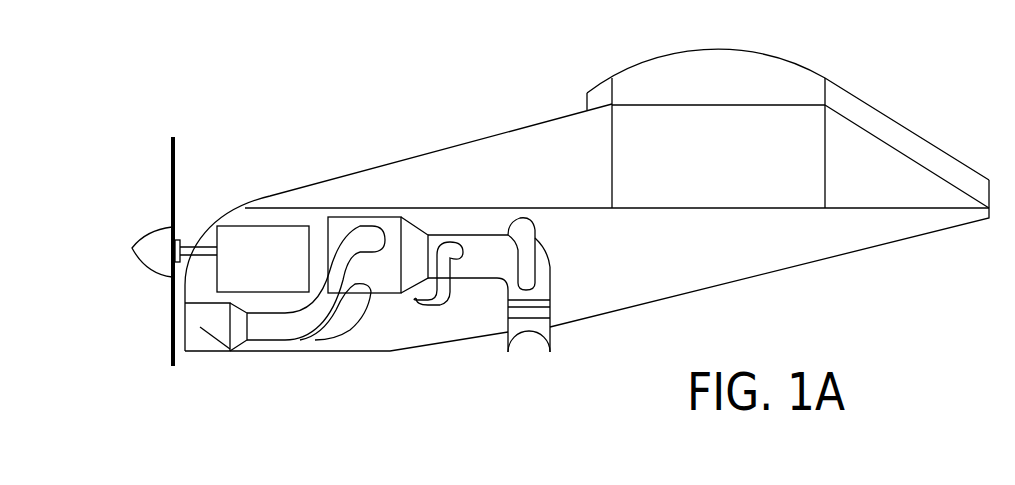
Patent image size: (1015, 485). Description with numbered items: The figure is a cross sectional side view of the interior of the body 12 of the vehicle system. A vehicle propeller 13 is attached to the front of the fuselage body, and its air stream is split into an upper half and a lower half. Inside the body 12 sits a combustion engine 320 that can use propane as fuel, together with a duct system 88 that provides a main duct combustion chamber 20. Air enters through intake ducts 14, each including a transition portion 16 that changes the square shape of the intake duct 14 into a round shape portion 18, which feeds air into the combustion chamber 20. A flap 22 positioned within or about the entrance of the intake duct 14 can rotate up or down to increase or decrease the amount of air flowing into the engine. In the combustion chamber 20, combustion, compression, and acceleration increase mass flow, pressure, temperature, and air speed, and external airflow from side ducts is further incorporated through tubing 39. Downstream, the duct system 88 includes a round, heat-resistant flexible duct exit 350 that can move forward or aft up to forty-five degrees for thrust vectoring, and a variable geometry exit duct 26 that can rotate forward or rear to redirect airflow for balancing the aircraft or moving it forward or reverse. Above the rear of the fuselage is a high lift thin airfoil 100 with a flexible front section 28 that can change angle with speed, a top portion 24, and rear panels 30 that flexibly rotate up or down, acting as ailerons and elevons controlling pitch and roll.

The body 12 is at (205, 92).
The vehicle propeller 13 is at (172, 183).
The intake duct 14 is at (200, 338).
The transition portion 16 is at (238, 330).
The round shape portion 18 is at (281, 326).
The main duct combustion chamber 20 is at (383, 277).
The flap 22 is at (213, 328).
The top portion 24 is at (716, 50).
The variable geometry exit duct 26 is at (543, 332).
The front section 28 is at (598, 97).
The rear panels 30 is at (955, 160).
The tubing 39 is at (445, 250).
The duct system 88 is at (553, 395).
The airfoil 100 is at (802, 64).
The combustion engine 320 is at (266, 252).
The flexible duct exit 350 is at (537, 305).